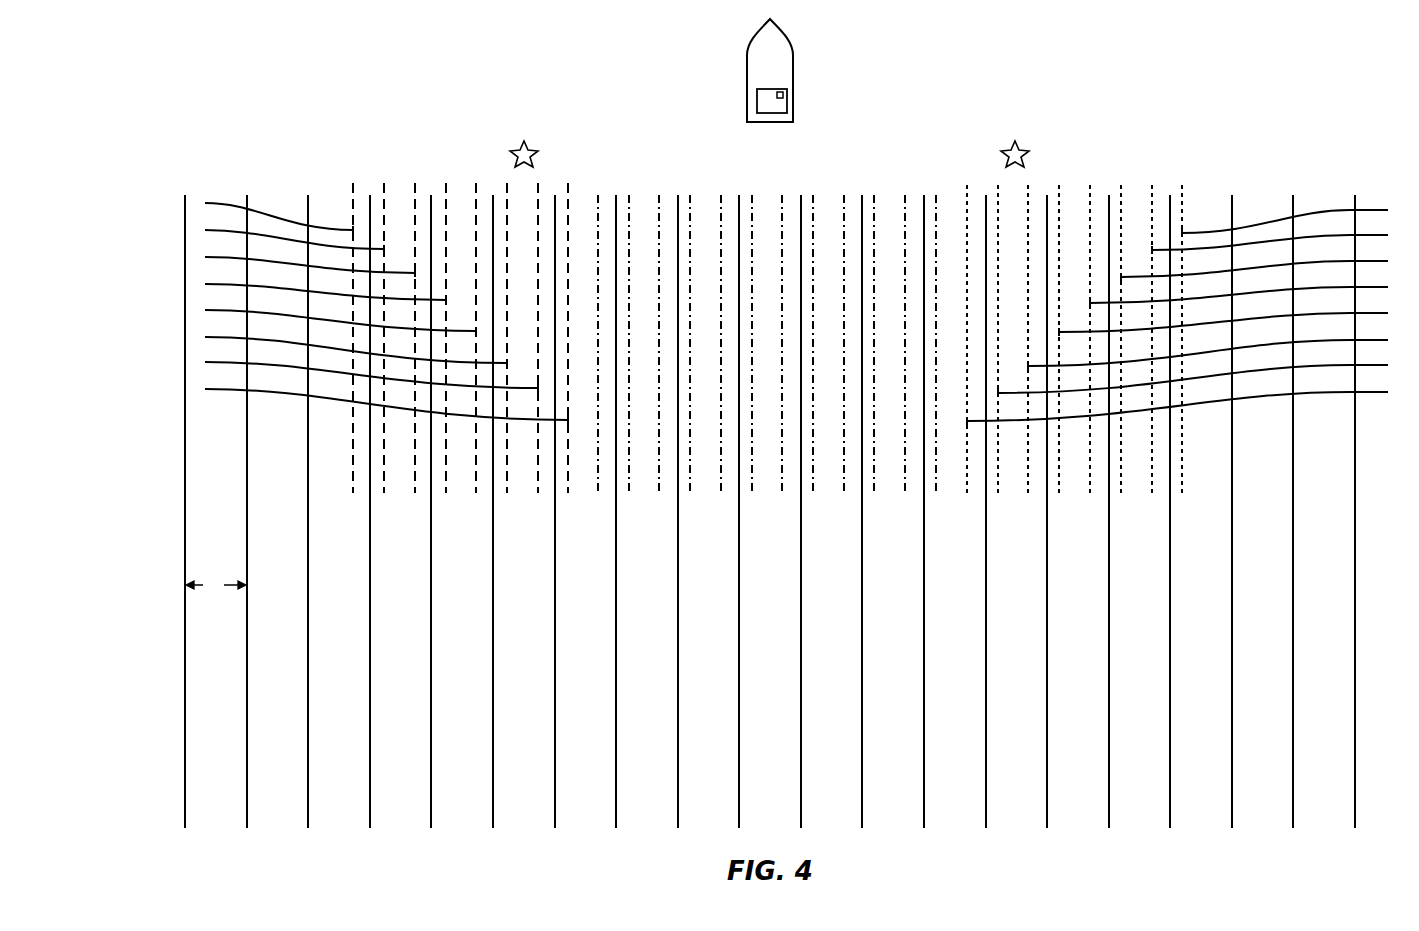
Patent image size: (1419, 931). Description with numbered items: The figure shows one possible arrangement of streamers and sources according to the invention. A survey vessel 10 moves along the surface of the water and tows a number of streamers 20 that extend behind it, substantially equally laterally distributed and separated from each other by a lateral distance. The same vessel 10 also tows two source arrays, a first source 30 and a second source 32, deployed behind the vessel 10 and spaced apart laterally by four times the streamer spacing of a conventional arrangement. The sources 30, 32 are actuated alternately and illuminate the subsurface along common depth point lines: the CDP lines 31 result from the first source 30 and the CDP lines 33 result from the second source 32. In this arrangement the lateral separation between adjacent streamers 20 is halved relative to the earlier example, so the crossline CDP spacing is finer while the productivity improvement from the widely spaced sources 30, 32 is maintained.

The survey vessel 10 is at (795, 80).
The streamers 20 is at (1383, 732).
The first source 30 is at (511, 150).
The CDP lines resulting from the first source 31 is at (205, 389).
The second source 32 is at (1029, 150).
The CDP lines resulting from the second source 33 is at (1007, 375).